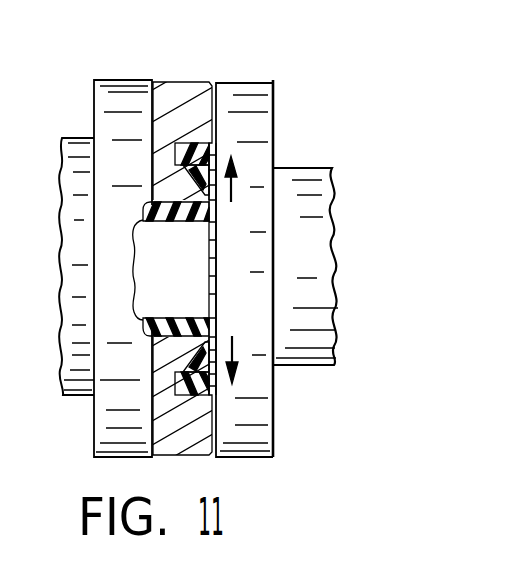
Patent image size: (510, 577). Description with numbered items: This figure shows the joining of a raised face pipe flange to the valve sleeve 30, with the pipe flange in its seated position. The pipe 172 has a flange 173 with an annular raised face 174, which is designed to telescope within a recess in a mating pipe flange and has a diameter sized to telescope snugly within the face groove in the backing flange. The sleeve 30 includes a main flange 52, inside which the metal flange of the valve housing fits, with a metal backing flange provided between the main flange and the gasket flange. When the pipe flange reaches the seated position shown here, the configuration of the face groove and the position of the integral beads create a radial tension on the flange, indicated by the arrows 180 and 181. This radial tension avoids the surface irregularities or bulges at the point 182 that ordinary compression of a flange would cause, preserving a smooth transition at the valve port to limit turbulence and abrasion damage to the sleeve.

The main flange 52 is at (128, 82).
The sleeve 30 is at (50, 284).
The flange 173 is at (267, 126).
The pipe 172 is at (316, 235).
The point 182 is at (194, 222).
The raised face 174 is at (210, 374).
The arrow 180 is at (237, 183).
The arrow 181 is at (237, 352).